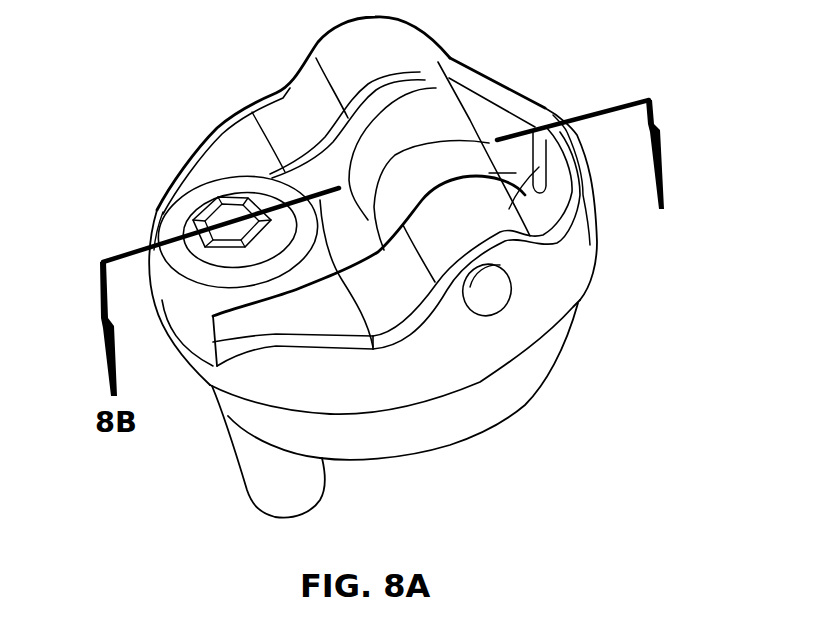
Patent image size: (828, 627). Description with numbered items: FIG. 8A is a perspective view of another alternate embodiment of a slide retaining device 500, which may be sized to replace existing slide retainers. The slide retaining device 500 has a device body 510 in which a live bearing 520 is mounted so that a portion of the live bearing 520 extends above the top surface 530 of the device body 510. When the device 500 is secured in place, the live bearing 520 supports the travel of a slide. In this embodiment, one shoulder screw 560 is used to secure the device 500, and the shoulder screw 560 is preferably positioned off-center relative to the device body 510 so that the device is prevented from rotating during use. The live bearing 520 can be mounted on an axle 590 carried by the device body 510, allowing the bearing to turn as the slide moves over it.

The slide retaining device 500 is at (166, 86).
The device body 510 is at (587, 290).
The live bearing 520 is at (448, 123).
The top surface 530 is at (292, 108).
The shoulder screw 560 is at (175, 225).
The axle 590 is at (486, 284).